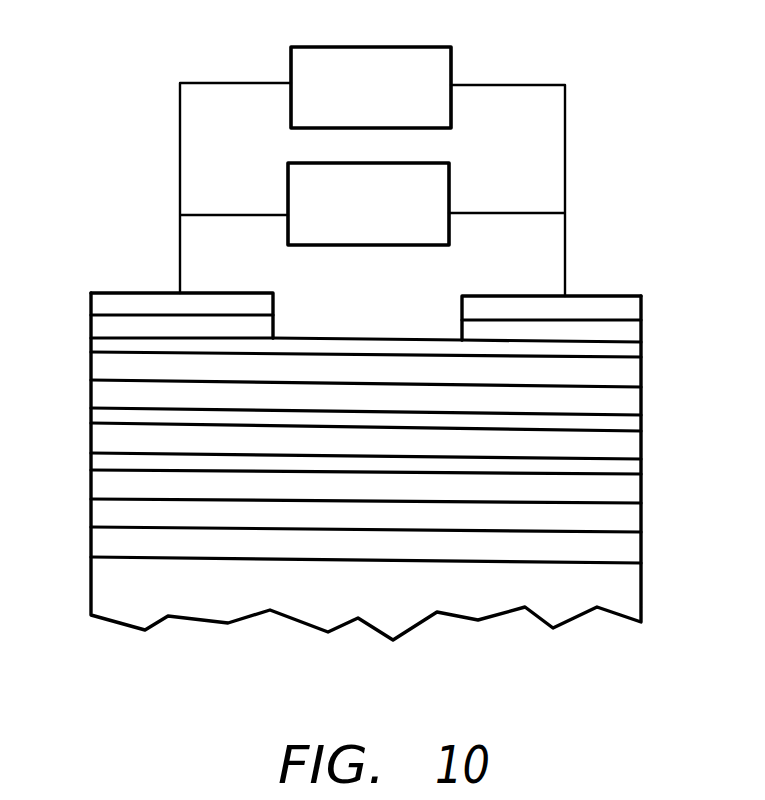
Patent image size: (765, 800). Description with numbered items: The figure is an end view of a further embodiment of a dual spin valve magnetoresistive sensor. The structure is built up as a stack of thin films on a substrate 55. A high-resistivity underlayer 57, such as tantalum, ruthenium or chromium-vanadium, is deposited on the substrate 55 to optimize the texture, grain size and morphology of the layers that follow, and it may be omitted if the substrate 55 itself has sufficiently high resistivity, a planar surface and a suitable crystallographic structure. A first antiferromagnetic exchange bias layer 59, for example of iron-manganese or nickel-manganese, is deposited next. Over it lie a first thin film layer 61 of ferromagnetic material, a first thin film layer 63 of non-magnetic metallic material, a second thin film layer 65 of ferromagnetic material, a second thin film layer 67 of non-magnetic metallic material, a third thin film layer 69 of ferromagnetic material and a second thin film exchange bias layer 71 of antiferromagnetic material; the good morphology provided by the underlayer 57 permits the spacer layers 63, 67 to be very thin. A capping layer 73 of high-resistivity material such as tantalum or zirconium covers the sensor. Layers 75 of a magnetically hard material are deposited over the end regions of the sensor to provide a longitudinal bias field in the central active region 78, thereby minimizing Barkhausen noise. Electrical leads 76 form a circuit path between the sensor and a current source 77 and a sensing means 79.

The substrate 55 is at (636, 582).
The underlayer 57 is at (636, 553).
The first antiferromagnetic exchange bias layer 59 is at (636, 524).
The first thin film layer of ferromagnetic material 61 is at (103, 486).
The first thin film layer of non-magnetic metallic material 63 is at (636, 472).
The second thin film layer of ferromagnetic material 65 is at (103, 440).
The second thin film layer of non-magnetic metallic material 67 is at (636, 432).
The third thin film layer of ferromagnetic material 69 is at (636, 403).
The second thin film exchange bias layer 71 is at (103, 366).
The capping layer 73 is at (636, 354).
The layers of magnetically hard material 75 is at (103, 326).
The electrical leads 76 is at (125, 293).
The current source 77 is at (386, 245).
The central active region 78 is at (353, 320).
The sensing means 79 is at (327, 47).